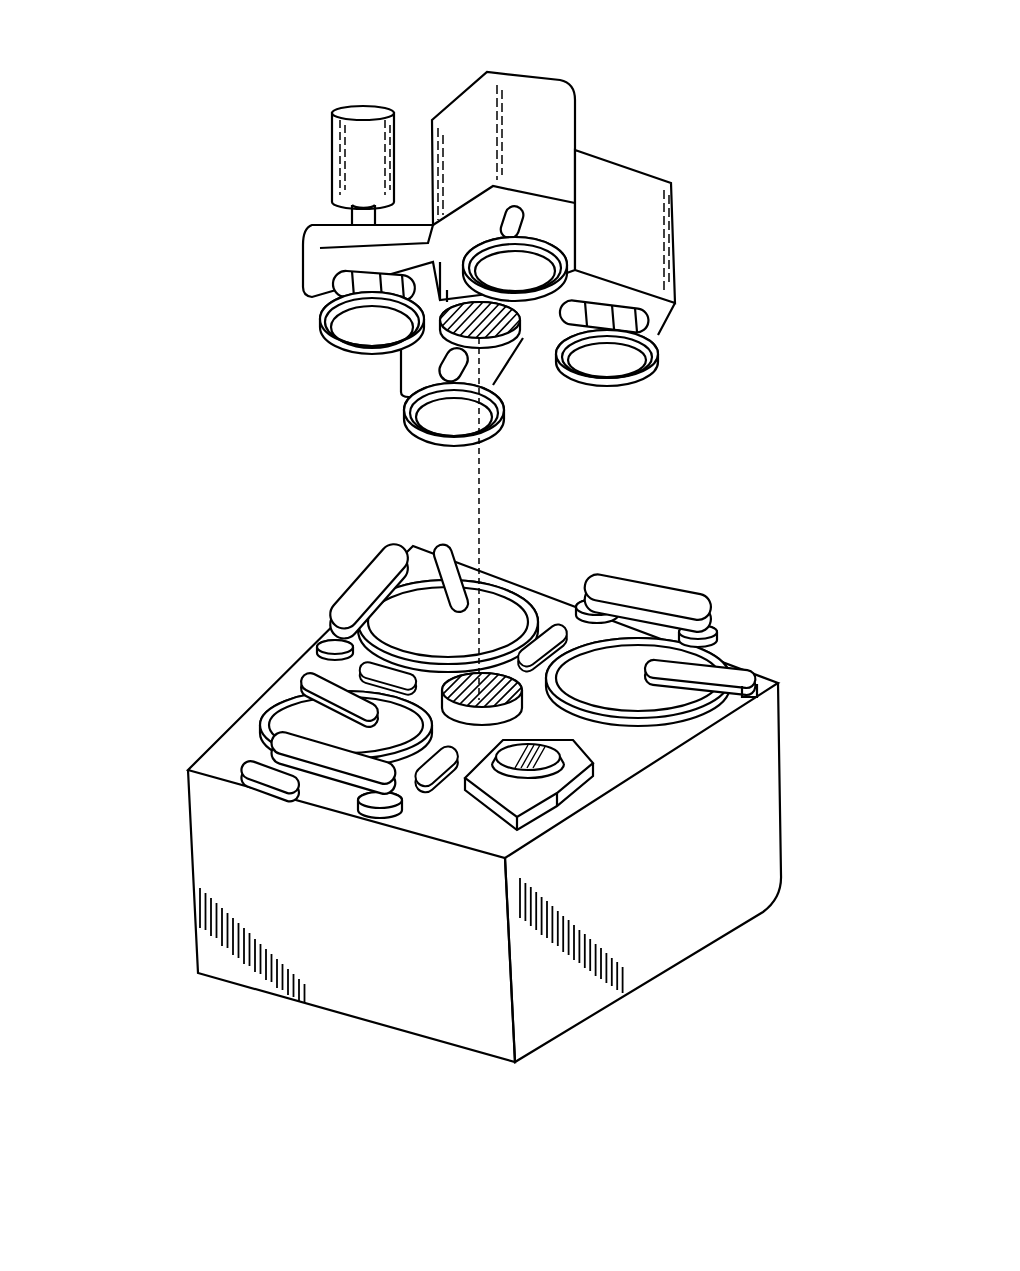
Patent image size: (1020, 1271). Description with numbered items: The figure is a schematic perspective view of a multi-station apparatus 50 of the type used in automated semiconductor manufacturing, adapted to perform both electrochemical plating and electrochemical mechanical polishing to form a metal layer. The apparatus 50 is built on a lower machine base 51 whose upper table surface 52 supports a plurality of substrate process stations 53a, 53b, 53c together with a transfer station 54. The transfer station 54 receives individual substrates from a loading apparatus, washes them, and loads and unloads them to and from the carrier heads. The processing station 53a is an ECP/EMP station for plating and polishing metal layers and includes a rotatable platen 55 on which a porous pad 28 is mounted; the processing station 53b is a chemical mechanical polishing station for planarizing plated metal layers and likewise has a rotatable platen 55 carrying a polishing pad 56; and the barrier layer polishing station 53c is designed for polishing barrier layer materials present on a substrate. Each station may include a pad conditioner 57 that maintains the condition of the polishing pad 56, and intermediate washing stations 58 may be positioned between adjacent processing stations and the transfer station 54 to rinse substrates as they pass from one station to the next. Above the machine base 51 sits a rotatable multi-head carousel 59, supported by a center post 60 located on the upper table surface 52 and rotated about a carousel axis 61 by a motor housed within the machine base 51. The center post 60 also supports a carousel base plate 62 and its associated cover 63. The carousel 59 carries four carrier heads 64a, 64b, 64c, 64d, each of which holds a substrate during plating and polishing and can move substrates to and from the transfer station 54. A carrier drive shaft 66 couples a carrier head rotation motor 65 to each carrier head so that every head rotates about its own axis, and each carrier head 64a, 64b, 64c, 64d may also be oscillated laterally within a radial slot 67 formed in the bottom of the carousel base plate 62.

The apparatus 50 is at (278, 5).
The lower machine base 51 is at (435, 804).
The upper table surface 52 is at (228, 752).
The substrate processing station 53a is at (634, 738).
The substrate process station 53b is at (502, 577).
The barrier layer polishing station 53c is at (279, 695).
The porous pad 28 is at (625, 688).
The transfer station 54 is at (569, 801).
The rotatable platen 55 is at (706, 714).
The polishing pad 56 is at (431, 641).
The pad conditioner 57 is at (694, 597).
The intermediate washing station 58 is at (550, 630).
The rotatable multi-head carousel 59 is at (486, 264).
The center post 60 is at (494, 718).
The carousel axis 61 is at (488, 457).
The carousel base plate 62 is at (527, 343).
The cover 63 is at (647, 244).
The carrier head 64a is at (661, 356).
The carrier head 64b is at (547, 232).
The carrier head 64c is at (324, 348).
The carrier head 64d is at (401, 431).
The carrier head rotation motor 65 is at (362, 110).
The carrier drive shaft 66 is at (350, 214).
The radial slot 67 is at (325, 293).